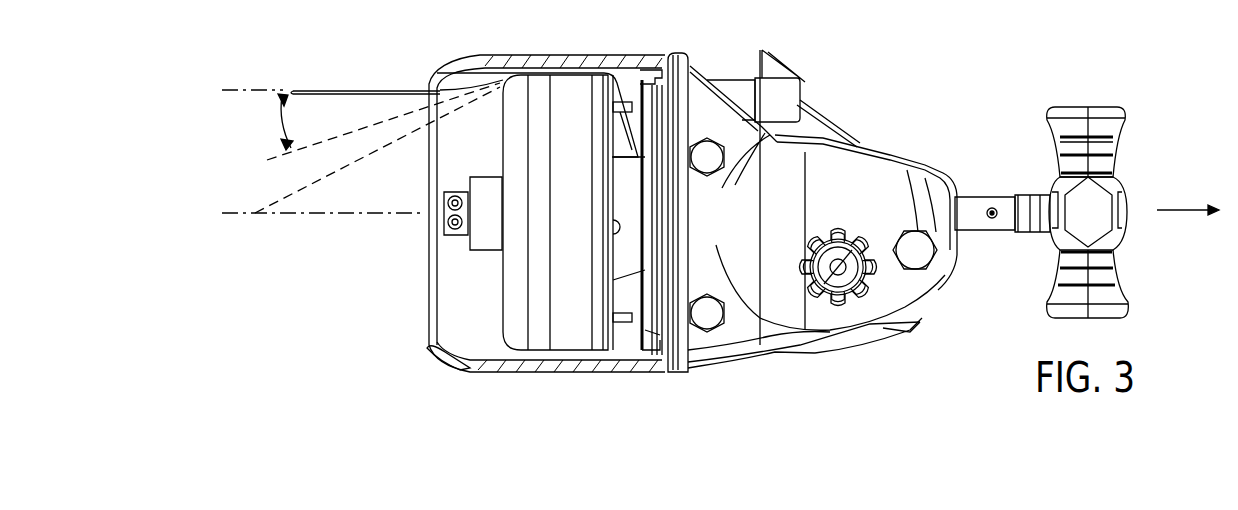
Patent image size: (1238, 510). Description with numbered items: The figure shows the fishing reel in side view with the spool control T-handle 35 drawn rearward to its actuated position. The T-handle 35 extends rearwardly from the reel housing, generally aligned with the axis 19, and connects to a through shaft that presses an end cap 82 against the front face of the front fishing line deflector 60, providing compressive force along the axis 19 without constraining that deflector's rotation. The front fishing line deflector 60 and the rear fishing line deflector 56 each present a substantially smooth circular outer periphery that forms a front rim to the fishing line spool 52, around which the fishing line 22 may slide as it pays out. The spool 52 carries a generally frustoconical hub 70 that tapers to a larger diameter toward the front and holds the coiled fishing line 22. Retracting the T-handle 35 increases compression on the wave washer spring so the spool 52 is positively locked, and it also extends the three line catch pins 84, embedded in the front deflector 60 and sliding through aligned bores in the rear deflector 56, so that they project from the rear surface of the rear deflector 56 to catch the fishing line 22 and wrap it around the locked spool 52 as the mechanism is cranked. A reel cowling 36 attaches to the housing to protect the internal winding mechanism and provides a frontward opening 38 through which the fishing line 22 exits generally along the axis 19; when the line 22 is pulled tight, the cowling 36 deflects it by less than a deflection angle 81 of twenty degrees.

The axis 19 is at (383, 212).
The fishing line 22 is at (387, 85).
The spool control T-handle 35 is at (1070, 96).
The reel cowling 36 is at (661, 55).
The frontward opening 38 is at (396, 320).
The fishing line spool 52 is at (623, 290).
The rear fishing line deflector 56 is at (582, 97).
The front fishing line deflector 60 is at (541, 97).
The hub 70 is at (643, 208).
The deflection angle 81 is at (285, 125).
The end cap 82 is at (483, 252).
The line catch pins 84 is at (621, 100).